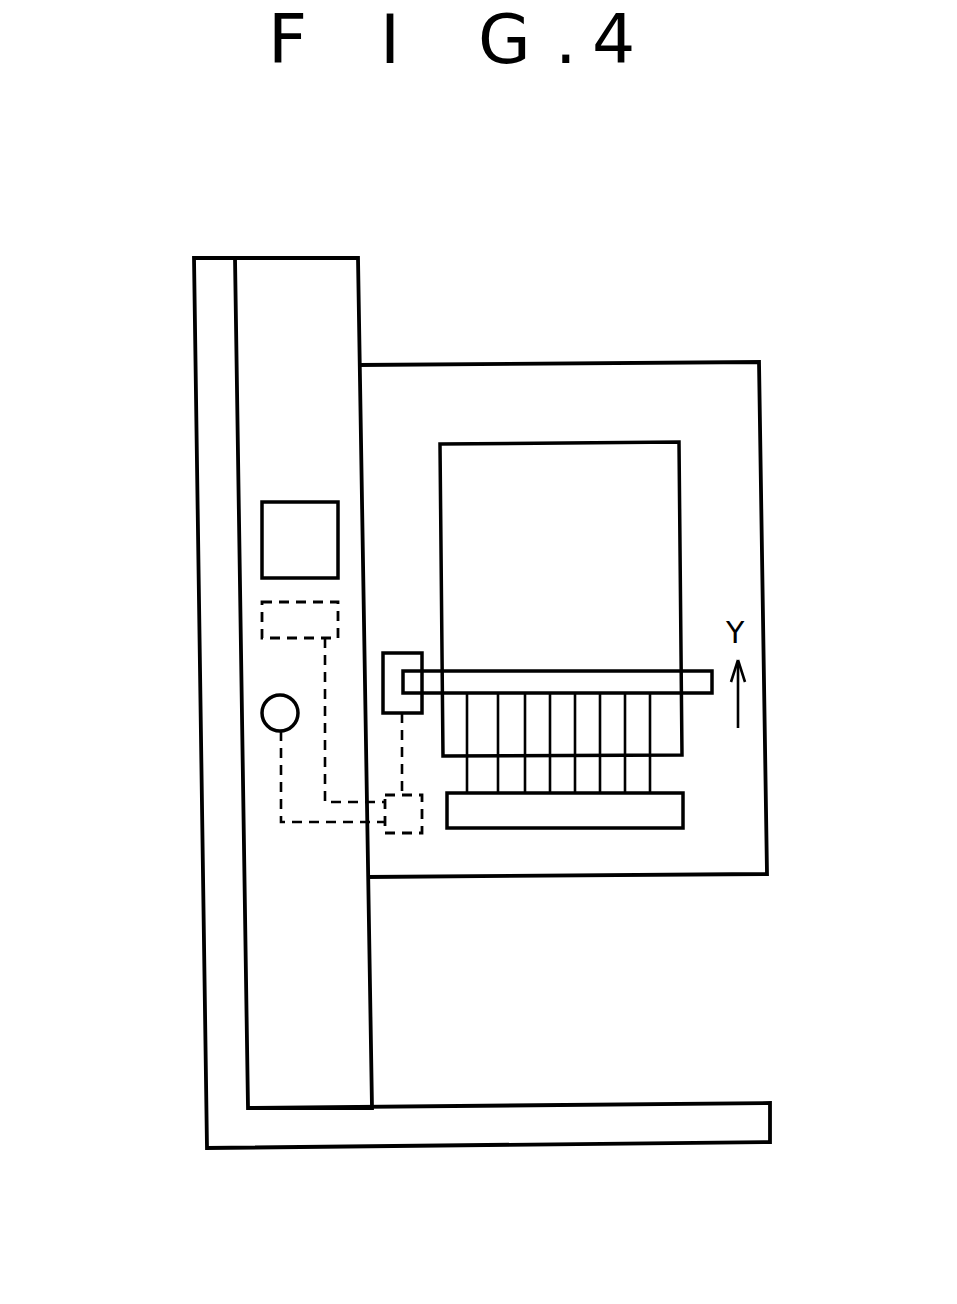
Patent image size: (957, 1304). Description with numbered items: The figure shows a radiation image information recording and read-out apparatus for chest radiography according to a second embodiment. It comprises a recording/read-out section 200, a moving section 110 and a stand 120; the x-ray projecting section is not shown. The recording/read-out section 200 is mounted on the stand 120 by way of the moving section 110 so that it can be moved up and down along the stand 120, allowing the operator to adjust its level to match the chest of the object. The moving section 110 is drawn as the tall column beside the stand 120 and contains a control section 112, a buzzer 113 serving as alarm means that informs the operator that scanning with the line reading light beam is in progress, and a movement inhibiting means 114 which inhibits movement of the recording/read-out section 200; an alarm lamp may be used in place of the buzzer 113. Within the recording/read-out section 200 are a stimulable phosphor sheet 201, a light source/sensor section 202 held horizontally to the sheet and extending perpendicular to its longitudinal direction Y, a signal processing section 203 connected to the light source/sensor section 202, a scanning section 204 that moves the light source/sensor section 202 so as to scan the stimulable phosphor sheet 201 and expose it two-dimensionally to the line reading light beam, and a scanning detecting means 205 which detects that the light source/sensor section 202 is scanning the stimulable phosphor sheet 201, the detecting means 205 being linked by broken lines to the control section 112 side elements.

The moving section 110 is at (284, 258).
The stand 120 is at (195, 314).
The control section 112 is at (262, 545).
The buzzer 113 is at (262, 716).
The movement inhibiting means 114 is at (262, 618).
The recording/read-out section 200 is at (546, 362).
The stimulable phosphor sheet 201 is at (680, 525).
The light source/sensor section 202 is at (652, 694).
The signal processing section 203 is at (607, 829).
The scanning section 204 is at (401, 652).
The scanning detecting means 205 is at (413, 834).